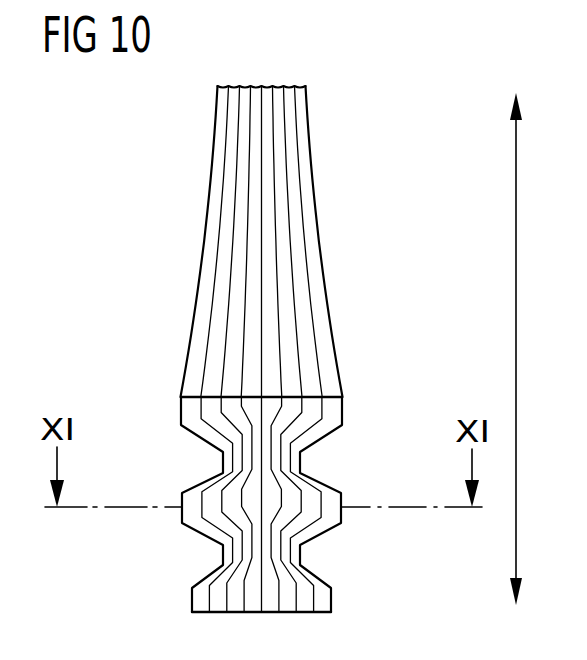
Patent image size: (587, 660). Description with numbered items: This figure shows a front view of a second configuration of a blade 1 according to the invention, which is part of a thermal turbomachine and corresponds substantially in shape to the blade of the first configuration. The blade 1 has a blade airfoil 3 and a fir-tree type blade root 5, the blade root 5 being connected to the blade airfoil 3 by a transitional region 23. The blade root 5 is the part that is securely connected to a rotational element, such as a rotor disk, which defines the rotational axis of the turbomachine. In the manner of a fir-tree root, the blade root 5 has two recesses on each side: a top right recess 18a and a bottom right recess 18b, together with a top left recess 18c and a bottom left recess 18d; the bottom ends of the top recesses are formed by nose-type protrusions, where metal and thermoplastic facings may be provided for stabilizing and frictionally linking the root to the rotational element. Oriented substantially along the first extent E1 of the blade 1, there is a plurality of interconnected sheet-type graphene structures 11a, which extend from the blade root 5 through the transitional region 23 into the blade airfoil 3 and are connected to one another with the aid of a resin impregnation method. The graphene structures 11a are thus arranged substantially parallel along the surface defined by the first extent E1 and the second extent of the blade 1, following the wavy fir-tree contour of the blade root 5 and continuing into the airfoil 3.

The blade 1 is at (251, 349).
The blade airfoil 3 is at (291, 241).
The blade root 5 is at (267, 504).
The sheet-type graphene structures 11a is at (317, 360).
The recess 18a is at (300, 462).
The recess 18b is at (300, 555).
The recess 18c is at (223, 462).
The recess 18d is at (223, 555).
The transitional region 23 is at (164, 387).
The first extent E1 is at (516, 308).